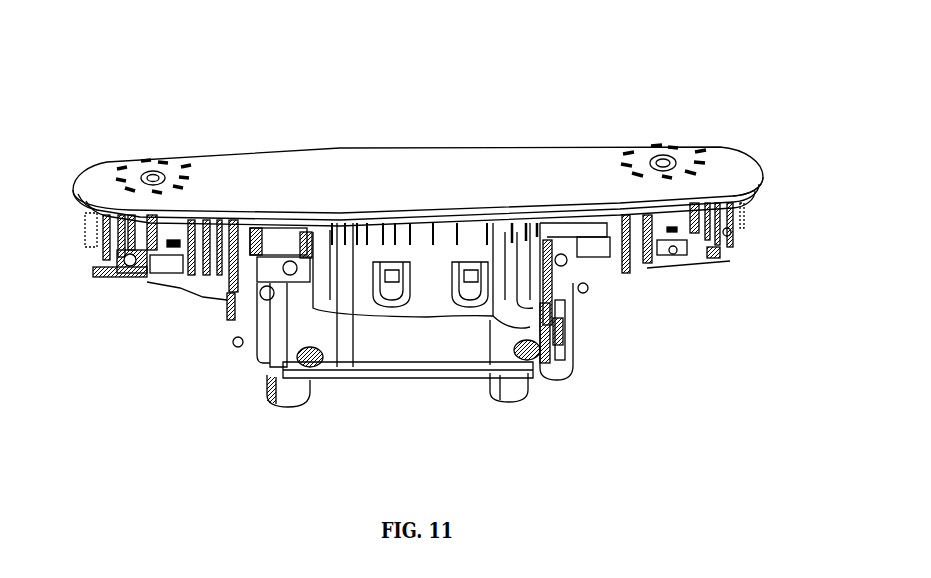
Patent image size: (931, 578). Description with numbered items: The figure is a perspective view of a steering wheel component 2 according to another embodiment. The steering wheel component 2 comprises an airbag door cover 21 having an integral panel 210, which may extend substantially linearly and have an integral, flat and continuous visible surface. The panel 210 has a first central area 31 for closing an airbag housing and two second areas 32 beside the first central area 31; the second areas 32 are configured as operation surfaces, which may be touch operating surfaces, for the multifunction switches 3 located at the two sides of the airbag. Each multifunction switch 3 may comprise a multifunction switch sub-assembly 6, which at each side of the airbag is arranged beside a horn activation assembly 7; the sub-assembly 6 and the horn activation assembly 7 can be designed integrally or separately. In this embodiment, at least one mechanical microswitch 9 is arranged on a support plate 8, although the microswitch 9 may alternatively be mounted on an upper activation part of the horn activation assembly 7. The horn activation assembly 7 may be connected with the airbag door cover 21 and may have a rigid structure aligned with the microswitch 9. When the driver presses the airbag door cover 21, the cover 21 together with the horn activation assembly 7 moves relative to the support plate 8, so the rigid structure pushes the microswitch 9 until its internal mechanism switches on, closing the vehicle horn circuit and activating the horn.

The steering wheel component 2 is at (573, 383).
The airbag door cover 21 is at (441, 125).
The panel 210 is at (483, 162).
The multifunction switch 3 is at (125, 148).
The first central area 31 is at (377, 163).
The second area 32 is at (233, 173).
The multifunction switch sub-assembly 6 is at (113, 279).
The horn activation assembly 7 is at (240, 268).
The support plate 8 is at (160, 298).
The mechanical microswitch 9 is at (262, 302).